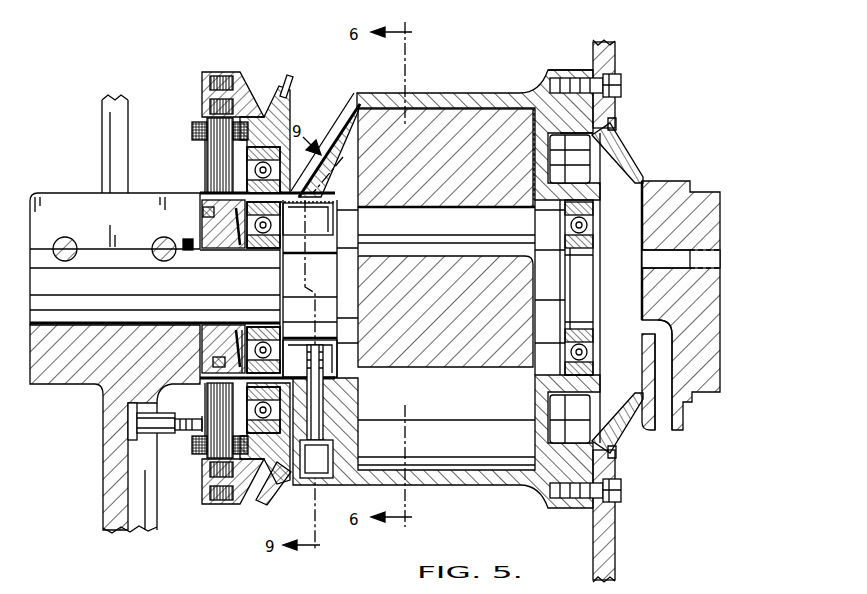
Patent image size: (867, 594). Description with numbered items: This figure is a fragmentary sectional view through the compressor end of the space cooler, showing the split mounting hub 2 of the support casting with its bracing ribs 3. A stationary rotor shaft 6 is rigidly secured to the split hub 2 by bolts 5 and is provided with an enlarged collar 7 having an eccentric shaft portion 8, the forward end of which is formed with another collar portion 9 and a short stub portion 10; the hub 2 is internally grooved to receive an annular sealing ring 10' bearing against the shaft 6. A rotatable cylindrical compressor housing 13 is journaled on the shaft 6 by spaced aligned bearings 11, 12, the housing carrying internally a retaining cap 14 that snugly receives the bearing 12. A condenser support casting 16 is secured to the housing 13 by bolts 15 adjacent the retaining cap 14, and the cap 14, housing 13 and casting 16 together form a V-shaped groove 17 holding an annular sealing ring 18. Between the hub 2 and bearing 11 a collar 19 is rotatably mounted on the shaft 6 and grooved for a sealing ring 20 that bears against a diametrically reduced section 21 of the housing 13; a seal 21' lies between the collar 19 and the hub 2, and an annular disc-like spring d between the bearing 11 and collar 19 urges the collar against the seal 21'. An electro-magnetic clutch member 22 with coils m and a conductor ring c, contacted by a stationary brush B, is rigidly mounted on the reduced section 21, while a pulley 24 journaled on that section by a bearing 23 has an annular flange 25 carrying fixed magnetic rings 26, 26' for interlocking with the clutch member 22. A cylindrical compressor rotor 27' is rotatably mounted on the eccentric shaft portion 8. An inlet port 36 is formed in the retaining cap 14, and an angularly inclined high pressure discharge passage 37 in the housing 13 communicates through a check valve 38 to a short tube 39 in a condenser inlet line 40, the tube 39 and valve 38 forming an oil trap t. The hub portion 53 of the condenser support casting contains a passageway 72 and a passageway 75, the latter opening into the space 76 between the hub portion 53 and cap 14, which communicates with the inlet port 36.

The split mounting hub 2 is at (62, 376).
The bracing ribs 3 is at (108, 155).
The bolts 5 is at (66, 236).
The stationary rotor shaft 6 is at (43, 278).
The enlarged collar 7 is at (347, 272).
The eccentric shaft portion 8 is at (445, 206).
The collar portion 9 is at (548, 300).
The short stub portion 10 is at (600, 288).
The annular sealing ring 10' is at (172, 263).
The bearing 11 is at (263, 250).
The bearing 12 is at (596, 240).
The rotatable cylindrical compressor housing 13 is at (446, 92).
The retaining cap 14 is at (595, 183).
The bolts 15 is at (622, 85).
The condenser support casting 16 is at (625, 150).
The V-shaped groove 17 is at (616, 118).
The annular sealing ring 18 is at (546, 72).
The collar 19 is at (222, 333).
The sealing ring 20 is at (204, 214).
The diametrically reduced section 21 is at (203, 210).
The seal 21' is at (193, 349).
The electro-magnetic clutch member 22 is at (192, 156).
The bearing 23 is at (272, 474).
The pulley 24 is at (290, 82).
The annular flange 25 is at (243, 72).
The fixed magnetic ring 26 is at (196, 275).
The fixed magnetic ring 26' is at (197, 271).
The cylindrical compressor rotor 27' is at (446, 416).
The inlet port 36 is at (538, 134).
The high pressure discharge passage 37 is at (348, 114).
The check valve 38 is at (307, 218).
The short tube 39 is at (325, 410).
The condenser inlet line 40 is at (328, 458).
The hub portion 53 is at (700, 180).
The passageway 72 is at (664, 424).
The passageway 75 is at (705, 262).
The space 76 is at (630, 381).
The coils m is at (194, 130).
The annular disc-like spring d is at (252, 323).
The oil trap t is at (292, 367).
The conductor ring c is at (203, 418).
The stationary brush B is at (162, 434).